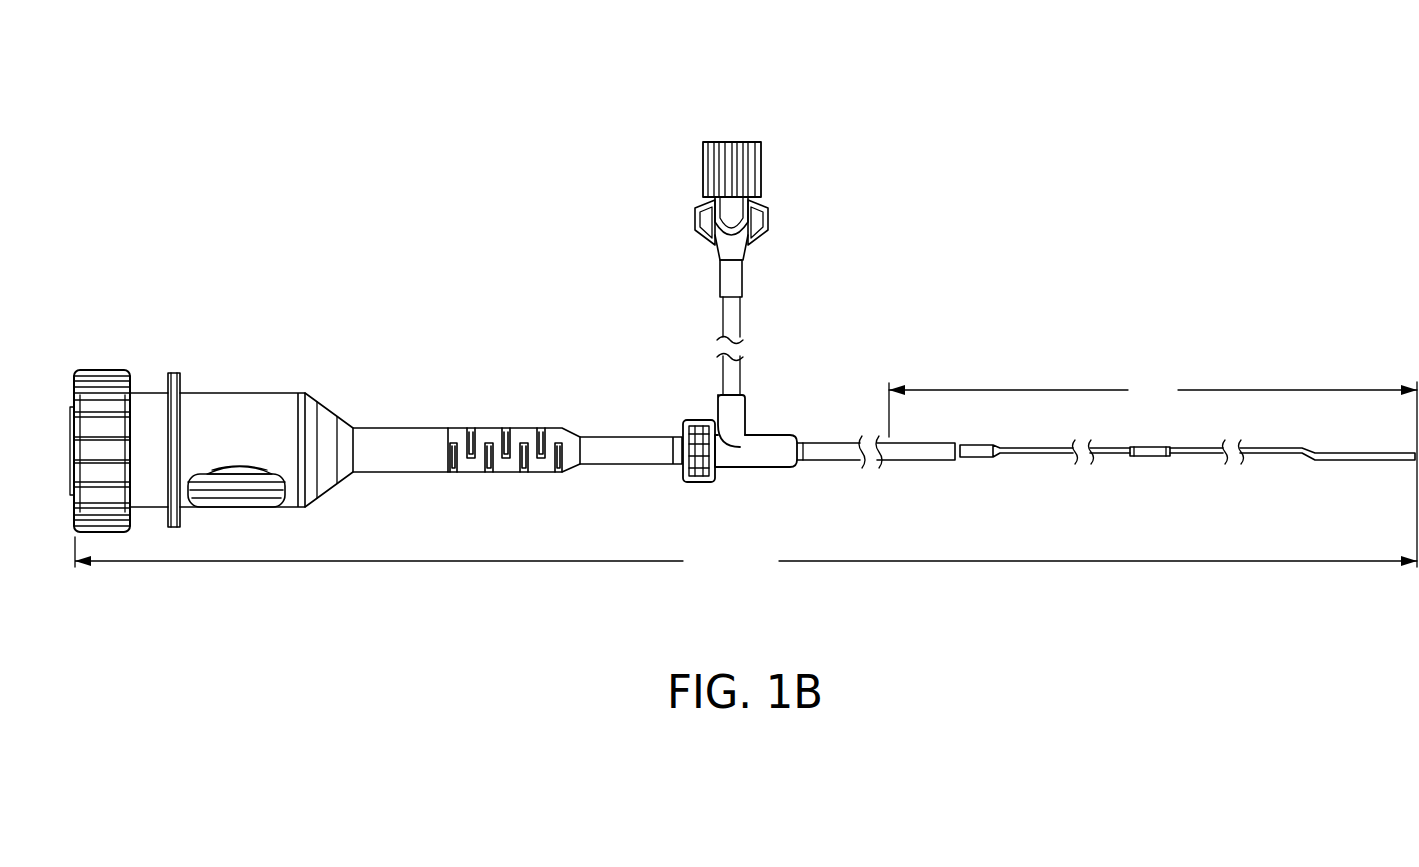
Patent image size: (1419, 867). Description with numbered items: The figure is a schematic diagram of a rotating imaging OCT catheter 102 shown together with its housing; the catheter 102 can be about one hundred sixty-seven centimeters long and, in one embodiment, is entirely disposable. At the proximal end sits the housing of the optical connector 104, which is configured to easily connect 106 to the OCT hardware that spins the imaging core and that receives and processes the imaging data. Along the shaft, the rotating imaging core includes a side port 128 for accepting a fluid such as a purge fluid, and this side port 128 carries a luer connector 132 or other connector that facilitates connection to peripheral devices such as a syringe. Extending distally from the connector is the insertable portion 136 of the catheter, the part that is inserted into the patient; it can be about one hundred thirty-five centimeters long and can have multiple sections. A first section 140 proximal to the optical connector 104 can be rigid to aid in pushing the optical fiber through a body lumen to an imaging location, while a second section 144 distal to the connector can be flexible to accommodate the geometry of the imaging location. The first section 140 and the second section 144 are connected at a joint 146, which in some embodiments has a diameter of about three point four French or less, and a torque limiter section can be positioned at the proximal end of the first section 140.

The rotating imaging OCT catheter 102 is at (340, 208).
The optical connector 104 is at (240, 392).
The connection to OCT hardware 106 is at (105, 357).
The side port 128 is at (716, 411).
The luer connector 132 is at (747, 128).
The insertable portion 136 is at (1153, 470).
The first section 140 is at (1128, 485).
The second section 144 is at (1415, 485).
The joint 146 is at (1145, 457).